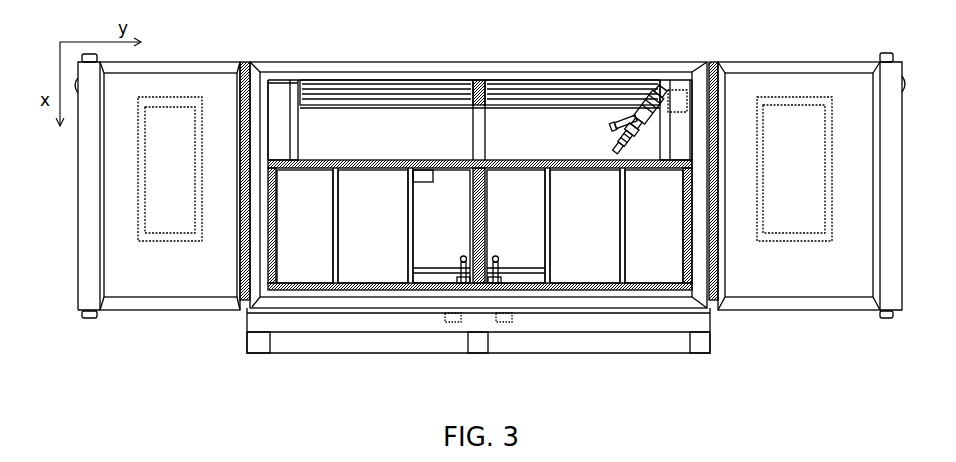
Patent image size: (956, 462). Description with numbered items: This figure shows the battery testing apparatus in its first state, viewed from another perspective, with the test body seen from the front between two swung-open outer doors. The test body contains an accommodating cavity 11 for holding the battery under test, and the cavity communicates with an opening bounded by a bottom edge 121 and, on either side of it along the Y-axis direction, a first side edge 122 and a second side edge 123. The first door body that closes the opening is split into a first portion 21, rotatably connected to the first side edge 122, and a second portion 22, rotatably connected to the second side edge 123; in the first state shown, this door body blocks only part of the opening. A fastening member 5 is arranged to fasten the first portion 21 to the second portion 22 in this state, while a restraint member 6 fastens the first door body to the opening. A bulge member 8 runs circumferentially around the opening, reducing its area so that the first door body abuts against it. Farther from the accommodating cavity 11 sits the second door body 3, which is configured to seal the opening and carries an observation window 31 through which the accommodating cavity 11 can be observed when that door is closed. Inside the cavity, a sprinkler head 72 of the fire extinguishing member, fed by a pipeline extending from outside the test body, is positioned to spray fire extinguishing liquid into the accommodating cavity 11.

The second door body 3 is at (783, 280).
The observation window 31 is at (807, 210).
The fastening member 5 is at (487, 163).
The restraint member 6 is at (493, 290).
The bulge member 8 is at (318, 293).
The accommodating cavity 11 is at (367, 140).
The first portion 21 is at (373, 270).
The second portion 22 is at (595, 270).
The sprinkler head 72 is at (660, 82).
The bottom edge 121 is at (547, 290).
The first side edge 122 is at (268, 100).
The second side edge 123 is at (700, 110).